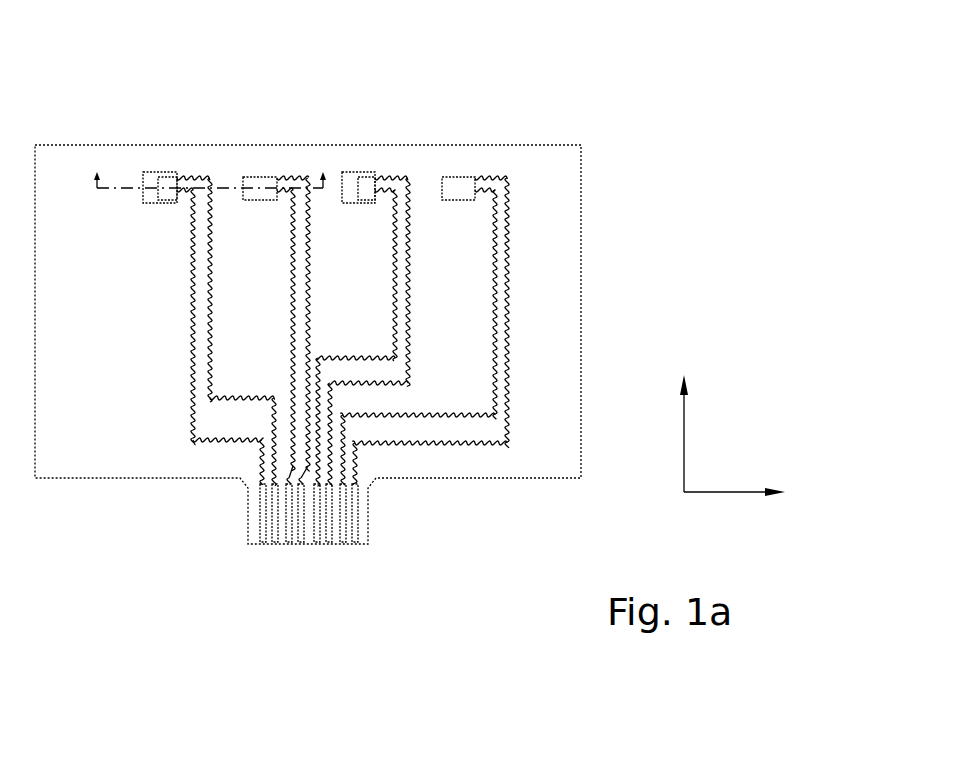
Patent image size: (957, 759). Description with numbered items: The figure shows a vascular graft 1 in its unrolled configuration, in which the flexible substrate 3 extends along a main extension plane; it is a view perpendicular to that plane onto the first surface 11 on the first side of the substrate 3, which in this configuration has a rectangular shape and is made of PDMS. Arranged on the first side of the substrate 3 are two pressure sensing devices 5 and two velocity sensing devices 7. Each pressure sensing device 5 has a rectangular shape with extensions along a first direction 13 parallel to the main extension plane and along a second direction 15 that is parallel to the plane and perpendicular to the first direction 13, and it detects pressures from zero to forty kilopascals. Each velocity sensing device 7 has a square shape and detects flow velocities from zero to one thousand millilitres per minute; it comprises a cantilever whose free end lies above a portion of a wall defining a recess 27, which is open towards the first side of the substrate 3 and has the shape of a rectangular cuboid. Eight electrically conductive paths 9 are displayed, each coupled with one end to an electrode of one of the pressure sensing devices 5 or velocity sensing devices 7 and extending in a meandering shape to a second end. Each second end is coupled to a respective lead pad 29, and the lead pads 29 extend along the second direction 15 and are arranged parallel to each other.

The vascular graft 1 is at (606, 122).
The flexible substrate 3 is at (348, 344).
The first surface 11 is at (557, 297).
The pressure sensing device 5 is at (262, 177).
The velocity sensing device 7 is at (167, 172).
The electrically conductive paths 9 is at (508, 250).
The first direction 13 is at (732, 494).
The second direction 15 is at (686, 418).
The recess 27 is at (152, 172).
The lead pad 29 is at (262, 505).